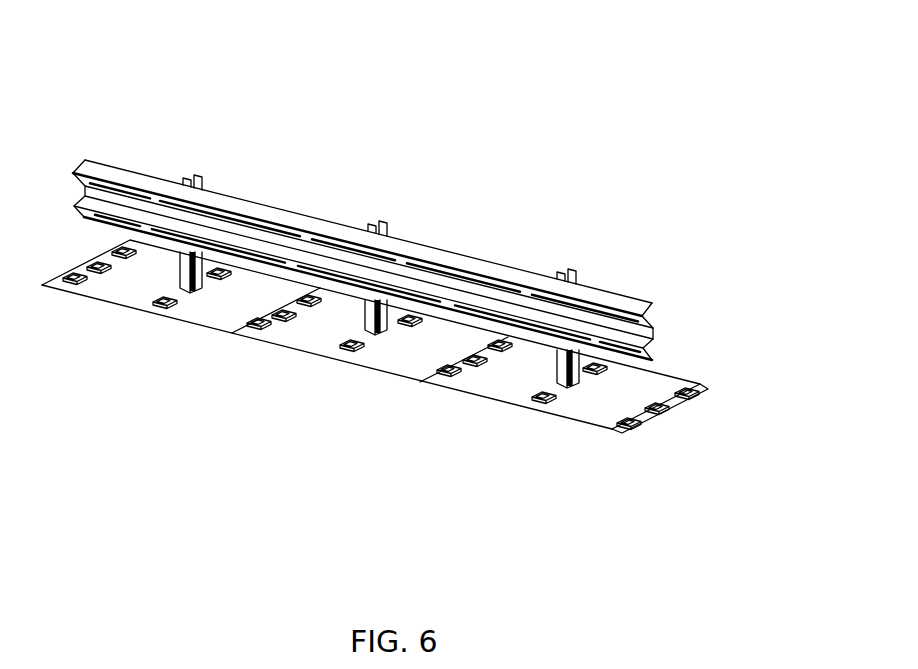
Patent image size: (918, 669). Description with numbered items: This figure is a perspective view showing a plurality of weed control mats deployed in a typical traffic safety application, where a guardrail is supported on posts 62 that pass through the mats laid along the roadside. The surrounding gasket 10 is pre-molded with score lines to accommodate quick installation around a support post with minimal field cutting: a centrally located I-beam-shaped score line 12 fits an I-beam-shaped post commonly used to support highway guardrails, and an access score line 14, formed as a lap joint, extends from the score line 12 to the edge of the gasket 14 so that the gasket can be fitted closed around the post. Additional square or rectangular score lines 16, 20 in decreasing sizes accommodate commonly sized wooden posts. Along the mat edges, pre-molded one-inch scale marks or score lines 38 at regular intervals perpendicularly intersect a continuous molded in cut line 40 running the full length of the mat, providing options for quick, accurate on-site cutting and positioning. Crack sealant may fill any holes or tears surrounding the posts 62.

The gasket 10 is at (424, 284).
The I-beam-shaped score line 12 is at (472, 260).
The access score line 14 is at (620, 430).
The square or rectangular score line 16 is at (528, 405).
The square or rectangular score line 20 is at (445, 377).
The score lines (scale marks) 38 is at (703, 388).
The molded in cut line 40 is at (142, 305).
The posts 62 is at (195, 178).